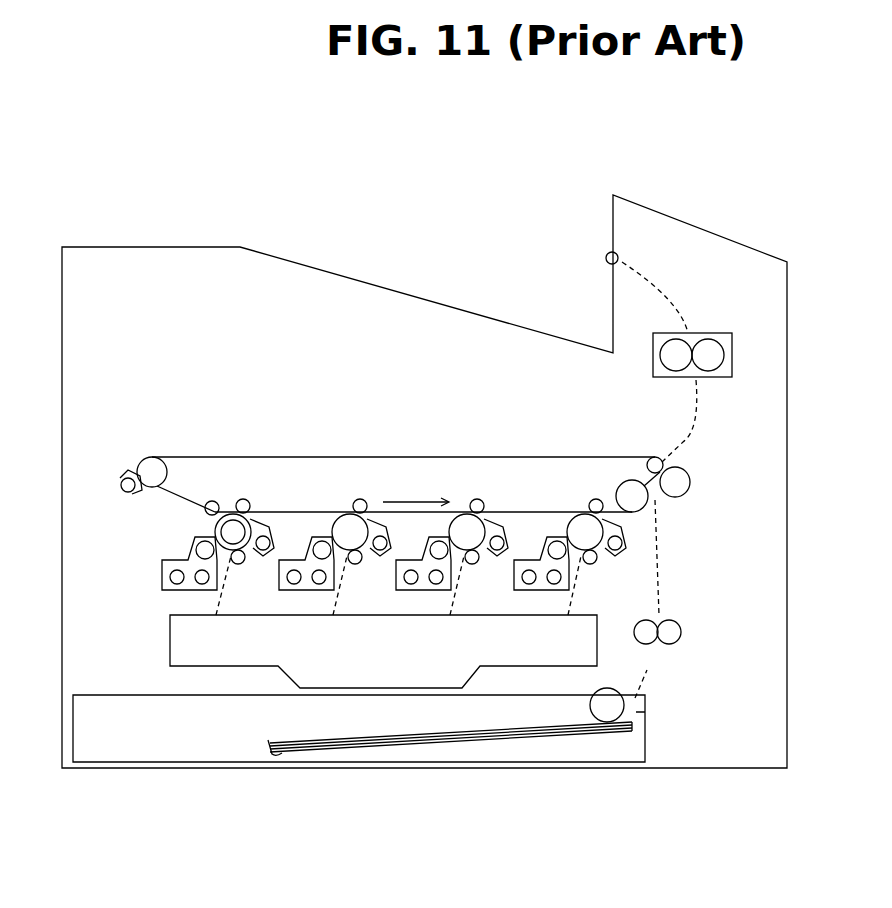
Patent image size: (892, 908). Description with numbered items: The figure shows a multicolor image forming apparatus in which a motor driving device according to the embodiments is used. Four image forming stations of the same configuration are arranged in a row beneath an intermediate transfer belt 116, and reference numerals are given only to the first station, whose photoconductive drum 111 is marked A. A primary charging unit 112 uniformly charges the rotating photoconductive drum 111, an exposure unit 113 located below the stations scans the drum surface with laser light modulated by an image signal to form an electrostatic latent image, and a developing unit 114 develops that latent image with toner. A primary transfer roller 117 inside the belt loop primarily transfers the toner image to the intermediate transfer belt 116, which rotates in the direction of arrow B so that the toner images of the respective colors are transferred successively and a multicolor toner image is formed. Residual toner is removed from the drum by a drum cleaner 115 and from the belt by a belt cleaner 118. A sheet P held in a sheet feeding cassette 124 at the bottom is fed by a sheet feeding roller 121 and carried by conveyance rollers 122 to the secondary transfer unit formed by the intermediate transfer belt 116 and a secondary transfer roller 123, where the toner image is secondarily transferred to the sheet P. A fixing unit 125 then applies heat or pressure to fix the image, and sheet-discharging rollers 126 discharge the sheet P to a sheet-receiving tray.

The photoconductive drum 111 is at (215, 532).
The primary charging unit 112 is at (240, 566).
The exposure unit 113 is at (510, 667).
The developing unit 114 is at (162, 559).
The drum cleaner 115 is at (243, 563).
The intermediate transfer belt 116 is at (432, 456).
The primary transfer roller 117 is at (243, 499).
The belt cleaner 118 is at (126, 474).
The sheet feeding roller 121 is at (603, 688).
The conveyance rollers 122 is at (666, 620).
The secondary transfer roller 123 is at (691, 487).
The sheet feeding cassette 124 is at (648, 722).
The fixing unit 125 is at (716, 332).
The sheet-discharging rollers 126 is at (621, 256).
The image forming station A is at (233, 532).
The arrow B is at (416, 490).
The sheet P is at (547, 730).